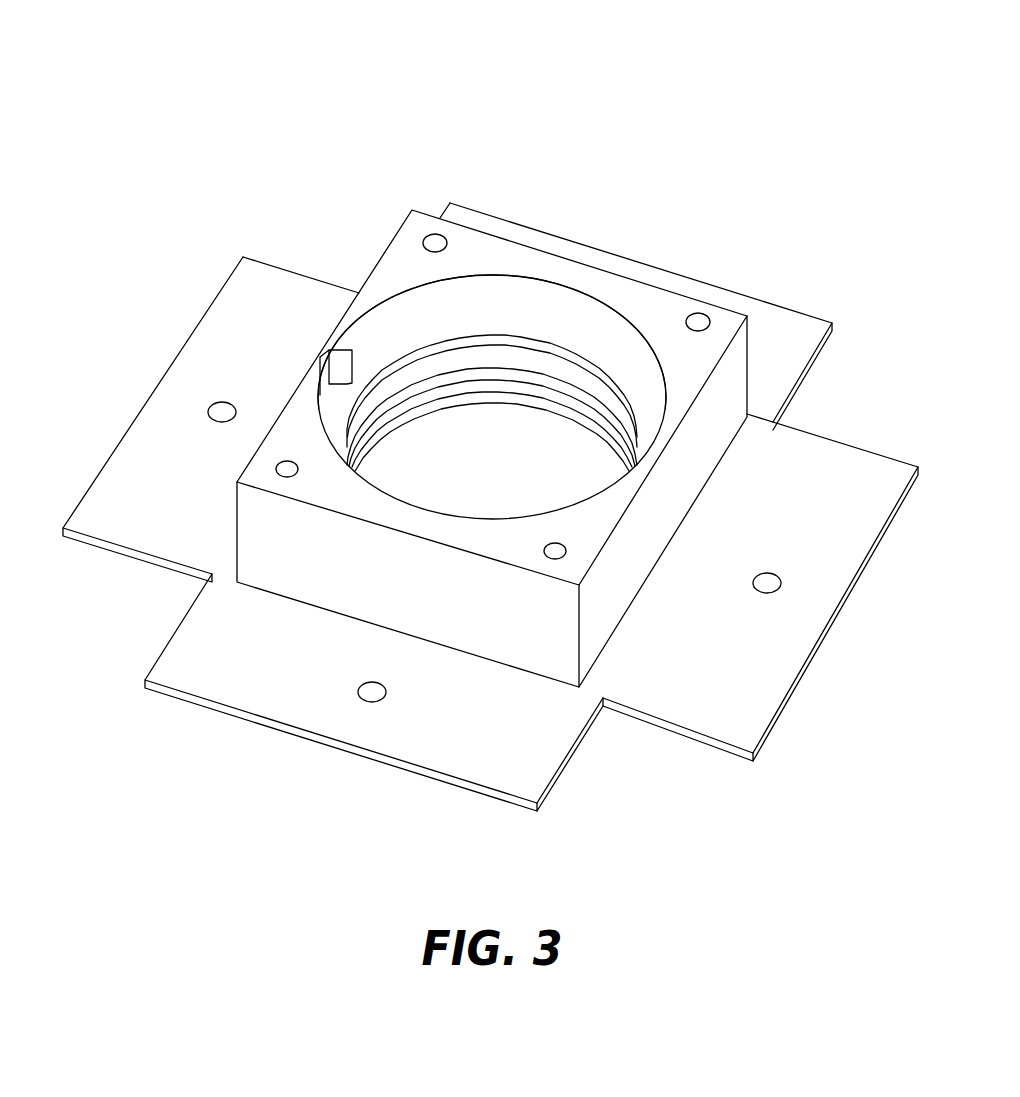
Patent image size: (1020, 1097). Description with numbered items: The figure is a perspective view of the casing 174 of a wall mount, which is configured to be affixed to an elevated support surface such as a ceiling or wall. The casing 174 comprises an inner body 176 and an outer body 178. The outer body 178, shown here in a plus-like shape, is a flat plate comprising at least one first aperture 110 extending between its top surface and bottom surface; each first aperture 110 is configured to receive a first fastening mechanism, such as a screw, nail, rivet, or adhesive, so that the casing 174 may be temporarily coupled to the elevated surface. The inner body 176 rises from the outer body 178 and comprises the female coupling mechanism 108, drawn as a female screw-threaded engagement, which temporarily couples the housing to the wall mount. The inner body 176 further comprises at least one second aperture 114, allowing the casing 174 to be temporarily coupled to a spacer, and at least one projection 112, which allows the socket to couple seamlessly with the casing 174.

The casing 174 is at (260, 80).
The inner body 176 is at (733, 400).
The outer body 178 is at (682, 690).
The female coupling mechanism 108 is at (543, 318).
The first aperture 110 is at (220, 410).
The projection 112 is at (346, 345).
The second aperture 114 is at (438, 236).